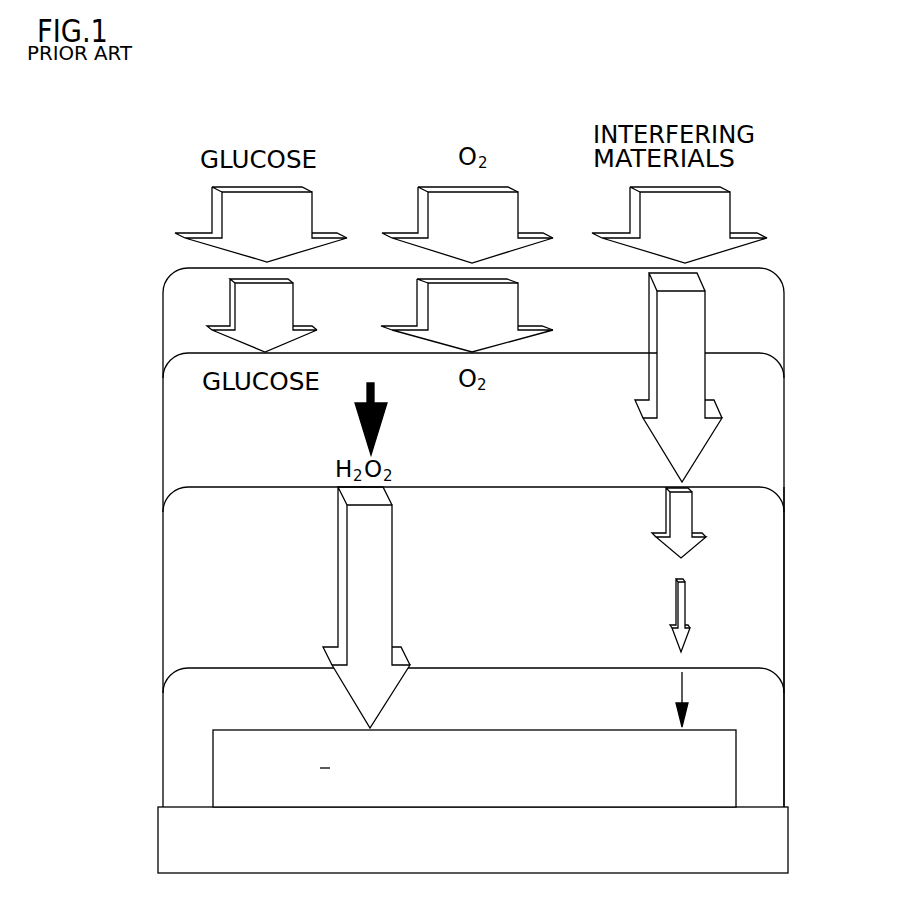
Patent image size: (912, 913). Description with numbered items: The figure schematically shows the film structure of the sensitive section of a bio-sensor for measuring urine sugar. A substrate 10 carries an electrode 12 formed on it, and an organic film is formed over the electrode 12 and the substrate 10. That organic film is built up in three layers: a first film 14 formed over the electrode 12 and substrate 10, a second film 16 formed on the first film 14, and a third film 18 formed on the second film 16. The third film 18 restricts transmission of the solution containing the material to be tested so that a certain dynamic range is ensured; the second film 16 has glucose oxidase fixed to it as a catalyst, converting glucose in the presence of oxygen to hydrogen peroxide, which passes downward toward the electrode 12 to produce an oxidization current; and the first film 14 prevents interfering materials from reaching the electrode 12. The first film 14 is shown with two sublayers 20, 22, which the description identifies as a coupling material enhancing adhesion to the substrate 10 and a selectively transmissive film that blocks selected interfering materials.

The substrate 10 is at (170, 837).
The electrode 12 is at (218, 767).
The first film 14 is at (795, 489).
The second film 16 is at (795, 355).
The third film 18 is at (795, 270).
The first film of interference eliminating layer 20 is at (170, 713).
The second film of interference eliminating layer 22 is at (170, 592).